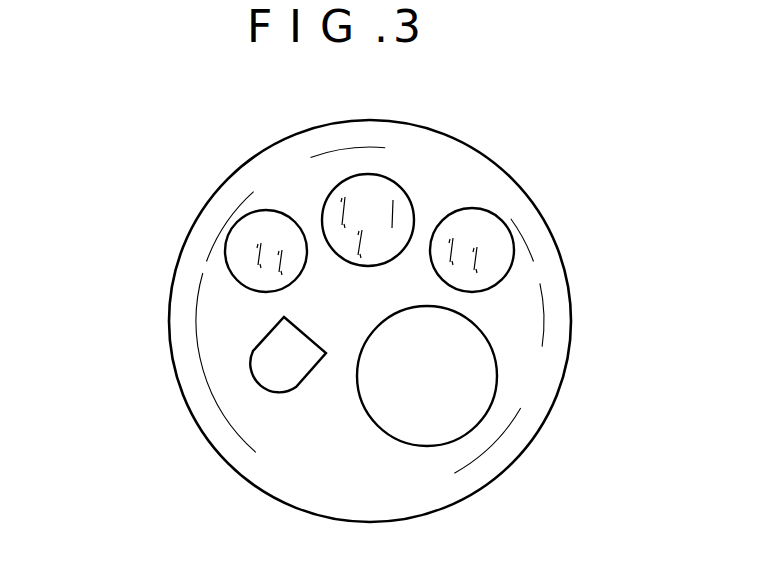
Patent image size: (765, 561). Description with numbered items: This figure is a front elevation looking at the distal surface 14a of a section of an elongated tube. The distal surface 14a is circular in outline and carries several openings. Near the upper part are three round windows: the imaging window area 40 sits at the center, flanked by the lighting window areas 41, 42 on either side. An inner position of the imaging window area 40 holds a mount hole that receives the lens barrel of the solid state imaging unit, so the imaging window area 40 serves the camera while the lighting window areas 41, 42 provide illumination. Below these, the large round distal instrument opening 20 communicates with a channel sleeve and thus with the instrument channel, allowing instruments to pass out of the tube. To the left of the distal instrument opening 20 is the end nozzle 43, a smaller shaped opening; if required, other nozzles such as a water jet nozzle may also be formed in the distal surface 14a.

The distal surface 14a is at (282, 487).
The distal instrument opening 20 is at (472, 430).
The imaging window area 40 is at (327, 198).
The lighting window area 41 is at (240, 250).
The lighting window area 42 is at (500, 237).
The end nozzle 43 is at (273, 392).